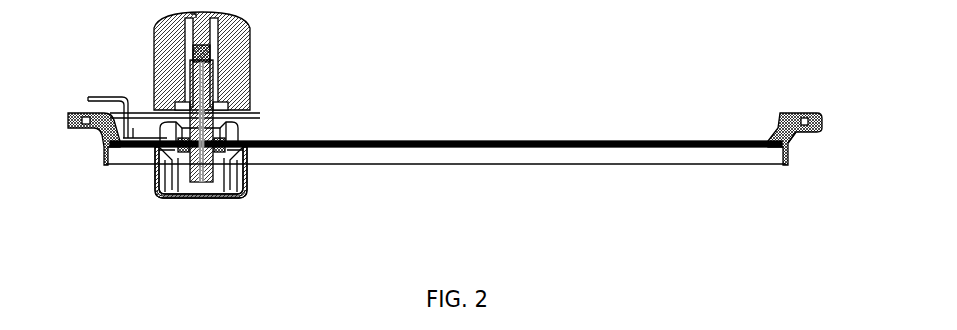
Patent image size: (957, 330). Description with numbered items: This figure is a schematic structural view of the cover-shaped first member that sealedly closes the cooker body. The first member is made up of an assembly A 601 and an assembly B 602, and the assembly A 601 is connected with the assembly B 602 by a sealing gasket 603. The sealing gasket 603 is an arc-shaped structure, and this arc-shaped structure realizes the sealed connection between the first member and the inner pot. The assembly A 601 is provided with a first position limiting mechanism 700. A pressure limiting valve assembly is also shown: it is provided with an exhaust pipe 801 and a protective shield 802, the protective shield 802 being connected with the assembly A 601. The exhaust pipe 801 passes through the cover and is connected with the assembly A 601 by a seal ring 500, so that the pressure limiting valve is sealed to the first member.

The seal ring 500 is at (164, 192).
The assembly A 601 is at (812, 113).
The assembly B 602 is at (817, 134).
The sealing gasket 603 is at (790, 156).
The first position limiting mechanism 700 is at (98, 97).
The exhaust pipe 801 is at (206, 184).
The protective shield 802 is at (247, 190).